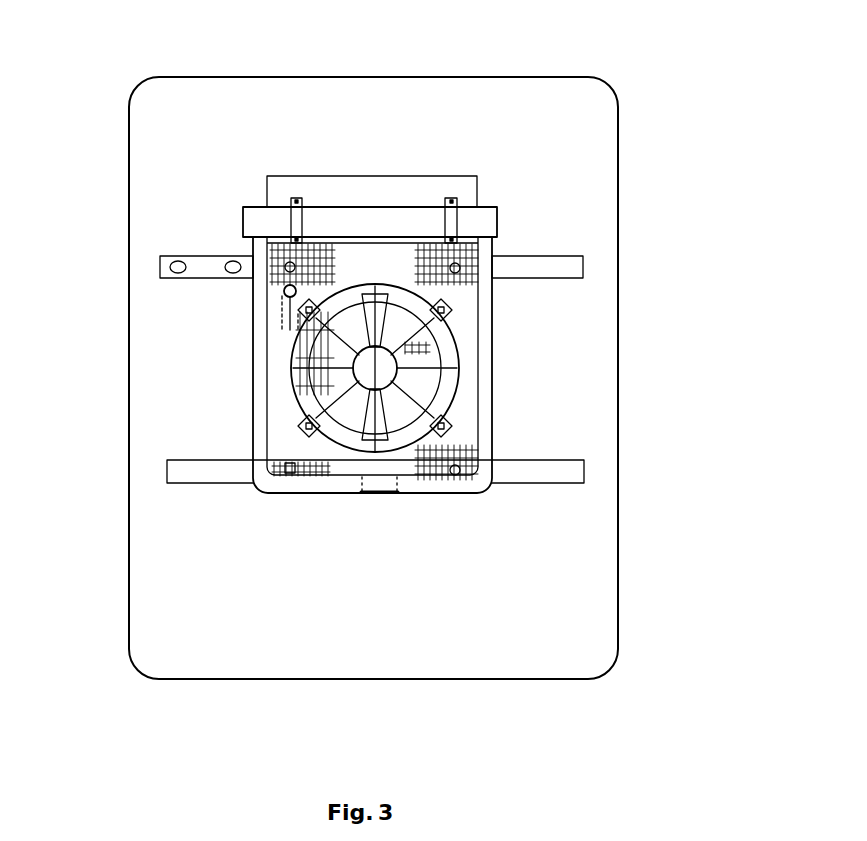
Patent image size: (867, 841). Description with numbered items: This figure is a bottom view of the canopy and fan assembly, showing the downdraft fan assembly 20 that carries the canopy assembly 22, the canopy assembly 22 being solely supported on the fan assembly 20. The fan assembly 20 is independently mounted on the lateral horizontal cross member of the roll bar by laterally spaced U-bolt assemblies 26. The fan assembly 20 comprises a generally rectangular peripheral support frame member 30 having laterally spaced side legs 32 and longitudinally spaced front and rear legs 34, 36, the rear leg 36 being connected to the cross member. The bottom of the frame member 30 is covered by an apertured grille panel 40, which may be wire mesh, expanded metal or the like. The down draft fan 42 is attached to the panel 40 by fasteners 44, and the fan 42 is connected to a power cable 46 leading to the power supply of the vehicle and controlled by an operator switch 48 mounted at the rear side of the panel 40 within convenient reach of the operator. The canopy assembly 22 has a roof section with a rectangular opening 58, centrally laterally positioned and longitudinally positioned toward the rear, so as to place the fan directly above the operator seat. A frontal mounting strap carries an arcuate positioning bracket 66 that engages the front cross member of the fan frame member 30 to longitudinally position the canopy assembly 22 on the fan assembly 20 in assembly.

The downdraft fan assembly 20 is at (516, 160).
The canopy assembly 22 is at (632, 566).
The U-bolt assemblies 26 is at (453, 212).
The peripheral support frame member 30 is at (509, 305).
The side legs 32 is at (487, 353).
The front leg 34 is at (297, 487).
The rear leg 36 is at (257, 215).
The apertured grille panel 40 is at (467, 452).
The down draft fan 42 is at (295, 403).
The fasteners 44 is at (297, 307).
The power cable 46 is at (290, 326).
The operator switch 48 is at (285, 287).
The rectangular opening 58 is at (362, 188).
The arcuate positioning bracket 66 is at (385, 494).